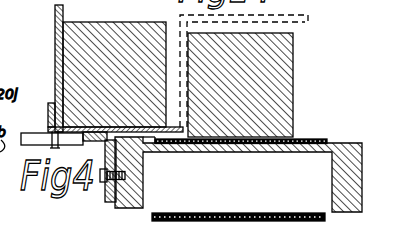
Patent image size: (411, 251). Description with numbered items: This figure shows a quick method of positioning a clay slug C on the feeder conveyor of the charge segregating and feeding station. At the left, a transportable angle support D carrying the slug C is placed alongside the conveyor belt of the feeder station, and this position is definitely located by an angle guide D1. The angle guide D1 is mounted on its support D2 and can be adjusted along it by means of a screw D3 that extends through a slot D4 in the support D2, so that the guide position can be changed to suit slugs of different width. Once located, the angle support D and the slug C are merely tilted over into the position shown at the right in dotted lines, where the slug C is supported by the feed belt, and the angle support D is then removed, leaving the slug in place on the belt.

The slug C is at (122, 22).
The angle support D is at (57, 42).
The angle guide D1 is at (49, 116).
The support D2 is at (106, 148).
The screw D3 is at (58, 147).
The slot D4 is at (47, 134).